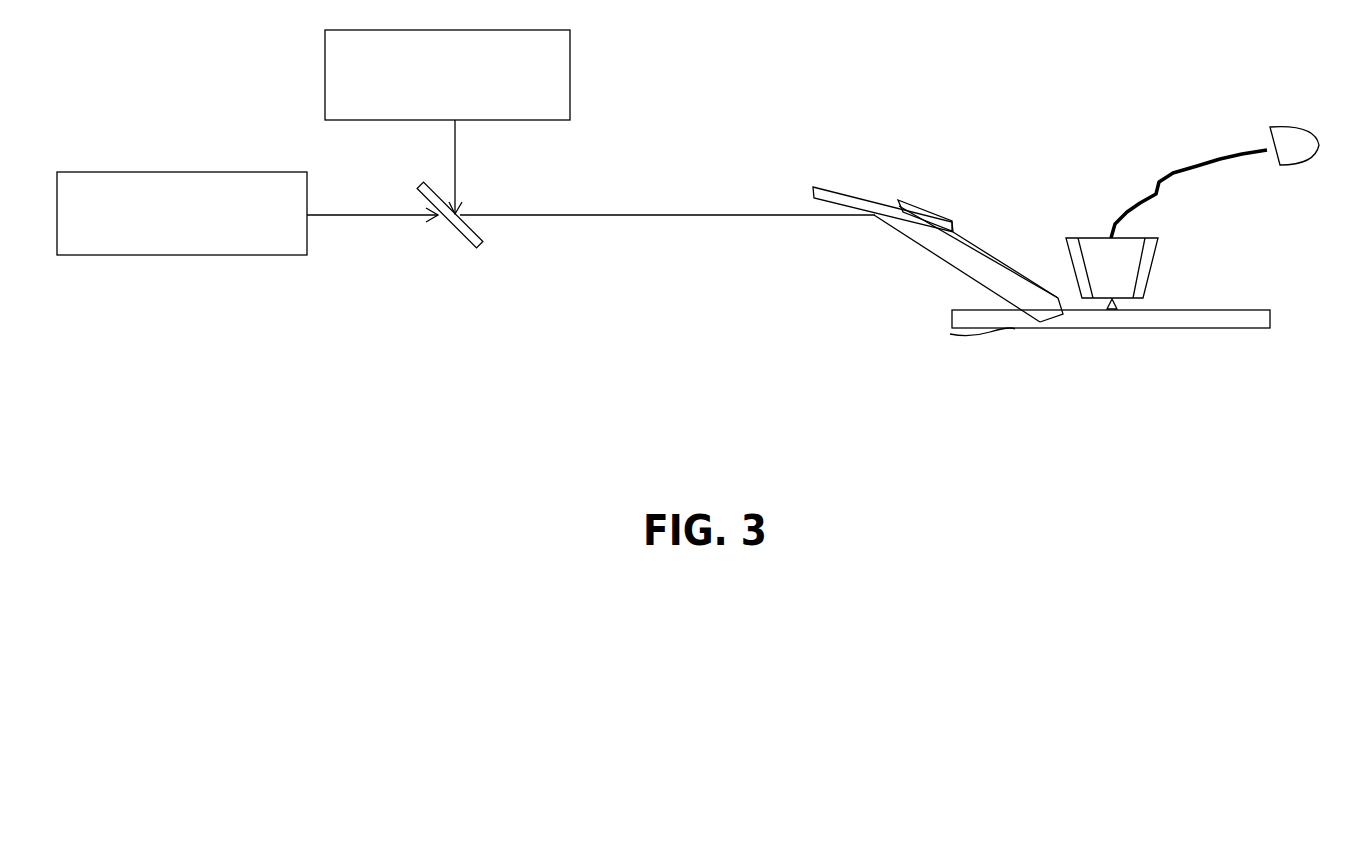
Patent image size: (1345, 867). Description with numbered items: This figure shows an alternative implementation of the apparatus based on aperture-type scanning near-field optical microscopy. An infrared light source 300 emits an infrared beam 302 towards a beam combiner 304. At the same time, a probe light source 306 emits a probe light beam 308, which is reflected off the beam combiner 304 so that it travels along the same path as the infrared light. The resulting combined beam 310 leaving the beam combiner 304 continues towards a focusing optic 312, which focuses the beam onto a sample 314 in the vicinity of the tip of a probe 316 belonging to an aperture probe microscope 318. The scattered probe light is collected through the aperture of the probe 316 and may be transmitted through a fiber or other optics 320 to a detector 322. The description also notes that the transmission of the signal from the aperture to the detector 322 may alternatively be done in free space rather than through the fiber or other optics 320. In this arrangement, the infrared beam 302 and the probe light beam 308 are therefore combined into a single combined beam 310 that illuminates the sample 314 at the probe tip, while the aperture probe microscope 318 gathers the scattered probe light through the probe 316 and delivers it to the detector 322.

The infrared light source 300 is at (182, 213).
The infrared beam 302 is at (372, 231).
The beam combiner 304 is at (490, 232).
The probe light source 306 is at (447, 75).
The probe light beam 308 is at (475, 167).
The combined beam 310 is at (667, 207).
The focusing optic 312 is at (883, 207).
The sample 314 is at (1084, 338).
The probe 316 is at (1146, 297).
The aperture probe microscope 318 is at (1134, 268).
The fiber or other optics 320 is at (1189, 194).
The detector 322 is at (1301, 139).